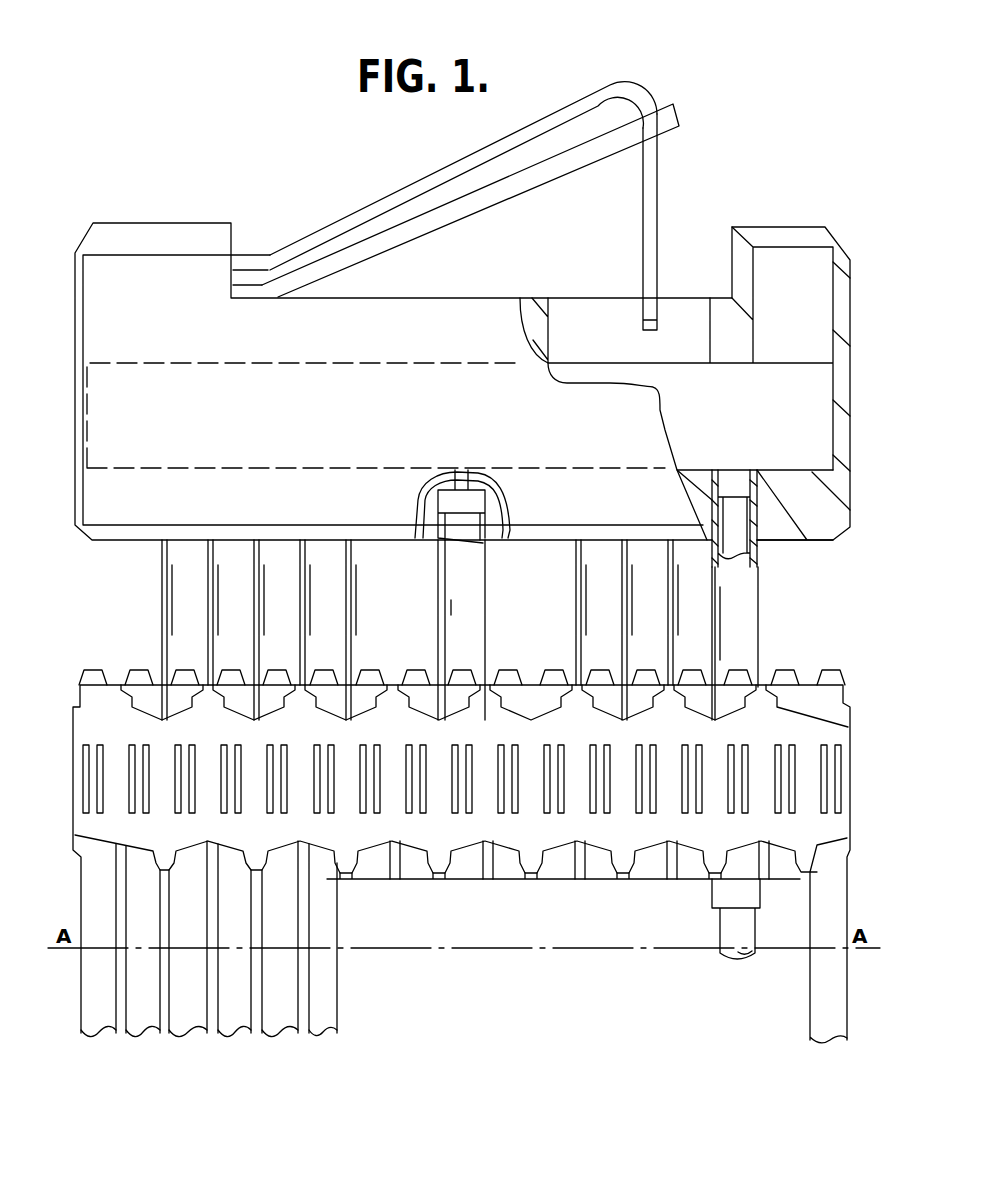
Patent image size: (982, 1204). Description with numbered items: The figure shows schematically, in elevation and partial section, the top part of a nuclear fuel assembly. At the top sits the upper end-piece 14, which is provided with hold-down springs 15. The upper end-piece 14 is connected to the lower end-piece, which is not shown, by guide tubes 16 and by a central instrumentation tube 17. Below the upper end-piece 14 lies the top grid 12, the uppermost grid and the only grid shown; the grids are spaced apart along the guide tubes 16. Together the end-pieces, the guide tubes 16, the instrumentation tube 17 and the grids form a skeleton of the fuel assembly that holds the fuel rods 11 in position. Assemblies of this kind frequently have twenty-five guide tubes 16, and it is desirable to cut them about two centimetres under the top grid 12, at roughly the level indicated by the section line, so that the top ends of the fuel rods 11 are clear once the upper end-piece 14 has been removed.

The fuel rods 11 is at (145, 690).
The top grid 12 is at (80, 734).
The upper end-piece 14 is at (398, 315).
The hold-down springs 15 is at (386, 200).
The guide tubes 16 is at (745, 618).
The central instrumentation tube 17 is at (473, 618).